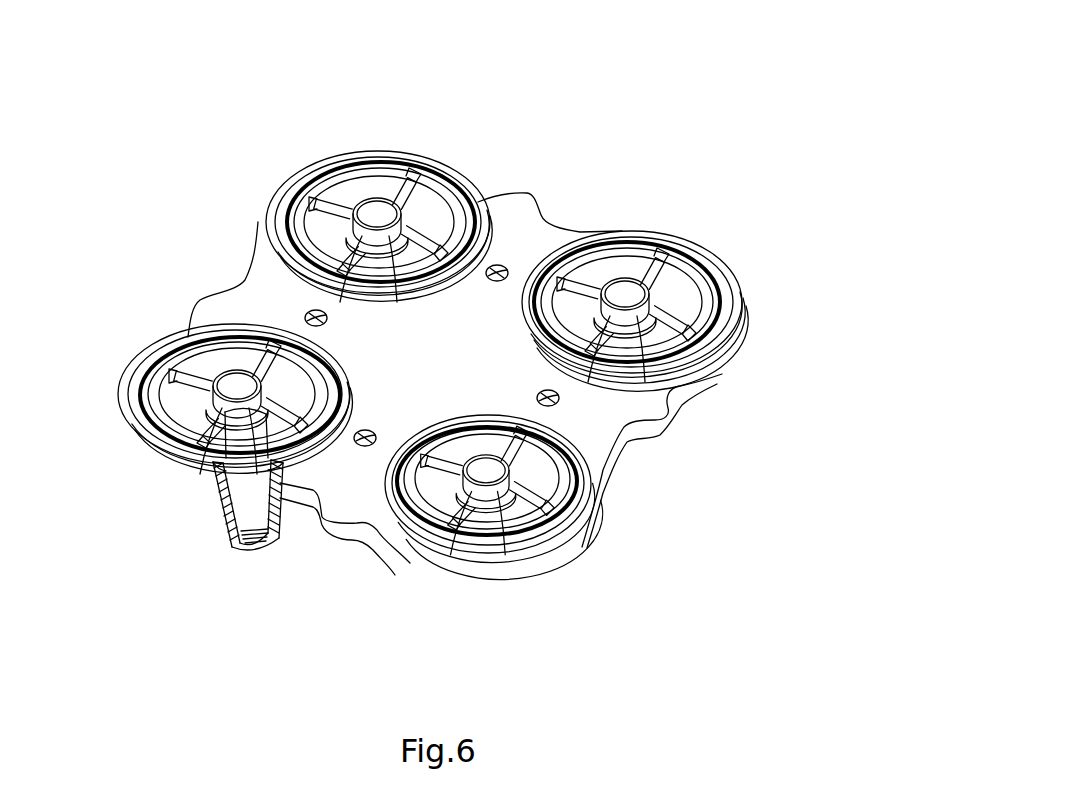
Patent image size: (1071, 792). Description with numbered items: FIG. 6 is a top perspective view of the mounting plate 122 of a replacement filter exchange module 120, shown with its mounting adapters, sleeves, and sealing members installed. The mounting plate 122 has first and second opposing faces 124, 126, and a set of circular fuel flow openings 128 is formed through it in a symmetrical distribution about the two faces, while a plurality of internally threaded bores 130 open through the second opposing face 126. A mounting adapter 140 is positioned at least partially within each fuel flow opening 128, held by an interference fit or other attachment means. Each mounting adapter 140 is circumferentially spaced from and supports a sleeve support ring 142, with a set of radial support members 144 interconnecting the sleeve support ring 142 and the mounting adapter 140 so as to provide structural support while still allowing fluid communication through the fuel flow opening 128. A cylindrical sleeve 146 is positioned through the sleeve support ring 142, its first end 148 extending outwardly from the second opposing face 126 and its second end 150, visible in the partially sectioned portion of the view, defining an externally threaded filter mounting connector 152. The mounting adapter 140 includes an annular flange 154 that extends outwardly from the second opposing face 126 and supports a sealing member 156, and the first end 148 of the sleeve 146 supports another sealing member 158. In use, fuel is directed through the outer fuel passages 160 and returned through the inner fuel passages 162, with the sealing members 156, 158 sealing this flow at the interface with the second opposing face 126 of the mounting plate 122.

The replacement filter exchange module 120 is at (660, 135).
The mounting plate 122 is at (530, 192).
The first opposing face 124 is at (657, 445).
The second opposing face 126 is at (695, 384).
The fuel flow openings 128 is at (412, 153).
The internally threaded bores 130 is at (306, 312).
The mounting adapter 140 is at (332, 187).
The sleeve support ring 142 is at (307, 262).
The radial support members 144 is at (330, 208).
The sleeve 146 is at (222, 505).
The first end 148 is at (405, 217).
The second end 150 is at (208, 530).
The externally threaded filter mounting connector 152 is at (218, 548).
The annular flange 154 is at (303, 247).
The sealing member 156 is at (453, 267).
The sealing member 158 is at (383, 273).
The outer fuel passages 160 is at (345, 200).
The inner fuel passages 162 is at (377, 214).